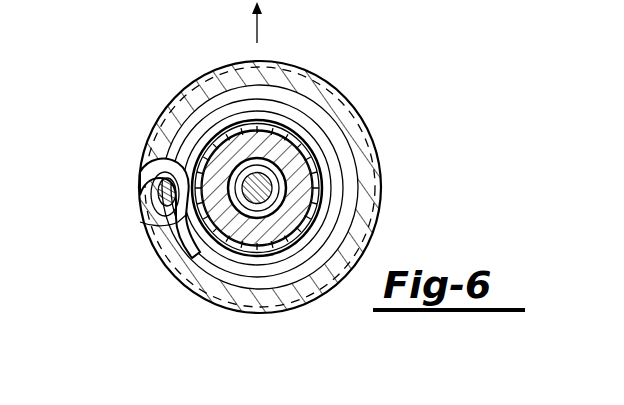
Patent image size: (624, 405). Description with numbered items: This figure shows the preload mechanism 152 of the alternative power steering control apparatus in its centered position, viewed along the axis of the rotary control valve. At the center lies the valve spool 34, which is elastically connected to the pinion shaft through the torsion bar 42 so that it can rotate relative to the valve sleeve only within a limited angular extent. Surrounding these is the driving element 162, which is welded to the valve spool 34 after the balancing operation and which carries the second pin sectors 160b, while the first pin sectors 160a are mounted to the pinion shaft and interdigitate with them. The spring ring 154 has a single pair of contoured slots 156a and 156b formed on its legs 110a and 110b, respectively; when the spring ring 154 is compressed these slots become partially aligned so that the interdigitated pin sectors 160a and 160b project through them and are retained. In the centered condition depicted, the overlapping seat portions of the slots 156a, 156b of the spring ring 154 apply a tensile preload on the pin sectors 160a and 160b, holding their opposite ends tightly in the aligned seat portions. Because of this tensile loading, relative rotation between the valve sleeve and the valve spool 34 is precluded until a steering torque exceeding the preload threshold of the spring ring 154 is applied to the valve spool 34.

The preload mechanism 152 is at (380, 98).
The spring ring 154 is at (272, 107).
The driving element 162 is at (352, 232).
The valve spool 34 is at (300, 180).
The torsion bar 42 is at (266, 194).
The leg 110a is at (170, 243).
The leg 110b is at (163, 152).
The contoured slot 156a is at (158, 215).
The contoured slot 156b is at (157, 160).
The first pin sectors 160a is at (165, 222).
The second pin sectors 160b is at (158, 180).